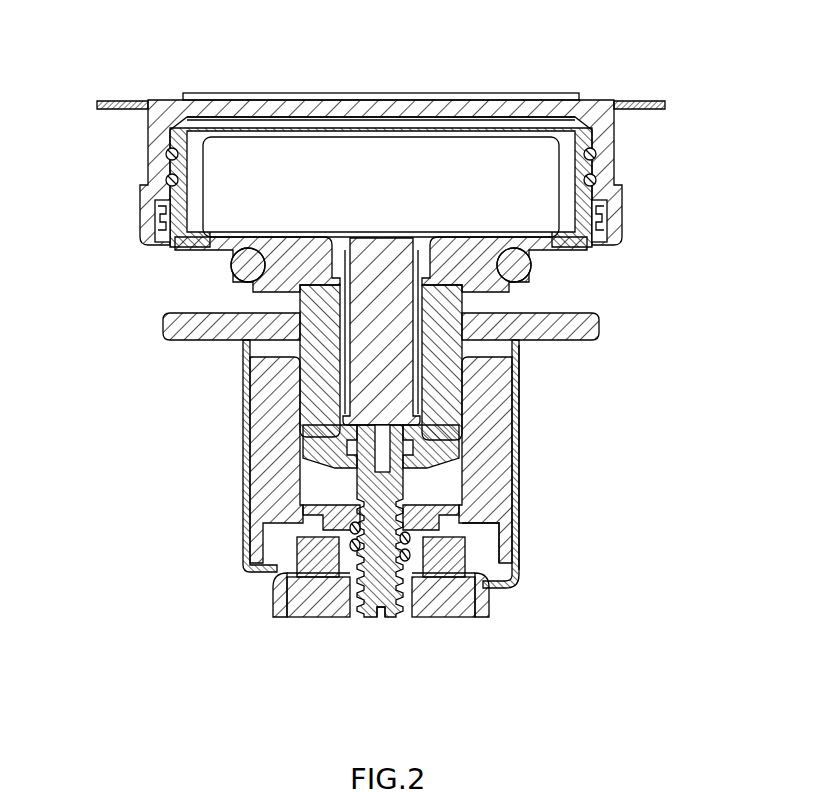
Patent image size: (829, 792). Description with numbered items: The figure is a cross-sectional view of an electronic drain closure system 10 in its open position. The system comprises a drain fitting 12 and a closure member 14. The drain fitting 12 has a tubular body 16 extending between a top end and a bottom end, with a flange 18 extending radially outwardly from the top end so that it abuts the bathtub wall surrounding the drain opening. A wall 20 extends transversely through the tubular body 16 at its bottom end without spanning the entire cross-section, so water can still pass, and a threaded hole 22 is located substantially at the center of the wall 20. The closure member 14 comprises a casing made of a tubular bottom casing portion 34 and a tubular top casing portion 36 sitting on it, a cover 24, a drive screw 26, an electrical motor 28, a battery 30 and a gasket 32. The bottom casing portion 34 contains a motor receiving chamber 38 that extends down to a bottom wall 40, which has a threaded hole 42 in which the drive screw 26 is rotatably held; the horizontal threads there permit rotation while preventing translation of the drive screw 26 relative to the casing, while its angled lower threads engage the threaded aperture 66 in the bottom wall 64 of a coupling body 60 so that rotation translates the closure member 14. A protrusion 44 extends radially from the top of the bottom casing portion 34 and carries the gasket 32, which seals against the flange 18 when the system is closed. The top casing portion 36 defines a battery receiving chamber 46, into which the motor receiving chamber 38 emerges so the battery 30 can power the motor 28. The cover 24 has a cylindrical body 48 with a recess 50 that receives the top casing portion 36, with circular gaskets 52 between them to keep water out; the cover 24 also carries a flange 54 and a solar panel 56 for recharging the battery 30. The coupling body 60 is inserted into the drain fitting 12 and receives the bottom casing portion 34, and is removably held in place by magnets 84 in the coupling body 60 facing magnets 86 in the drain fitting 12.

The electronic drain closure system 10 is at (110, 560).
The drain fitting 12 is at (552, 420).
The closure member 14 is at (707, 102).
The tubular body 16 is at (245, 436).
The flange 18 is at (597, 326).
The wall 20 is at (493, 580).
The threaded hole 22 is at (402, 605).
The cover 24 is at (120, 150).
The drive screw 26 is at (395, 491).
The electrical motor 28 is at (368, 366).
The battery 30 is at (527, 192).
The gasket 32 is at (516, 279).
The bottom casing portion 34 is at (322, 343).
The top casing portion 36 is at (176, 220).
The motor receiving chamber 38 is at (430, 356).
The bottom wall 40 is at (422, 443).
The threaded hole 42 is at (350, 466).
The protrusion 44 is at (258, 290).
The battery receiving chamber 46 is at (582, 128).
The cylindrical body 48 is at (152, 118).
The recess 50 is at (176, 122).
The circular gaskets 52 is at (597, 158).
The flange 54 is at (103, 101).
The solar panel 56 is at (405, 93).
The coupling body 60 is at (260, 520).
The bottom wall 64 is at (486, 511).
The threaded aperture 66 is at (410, 545).
The magnets 84 is at (318, 562).
The magnets 86 is at (318, 598).